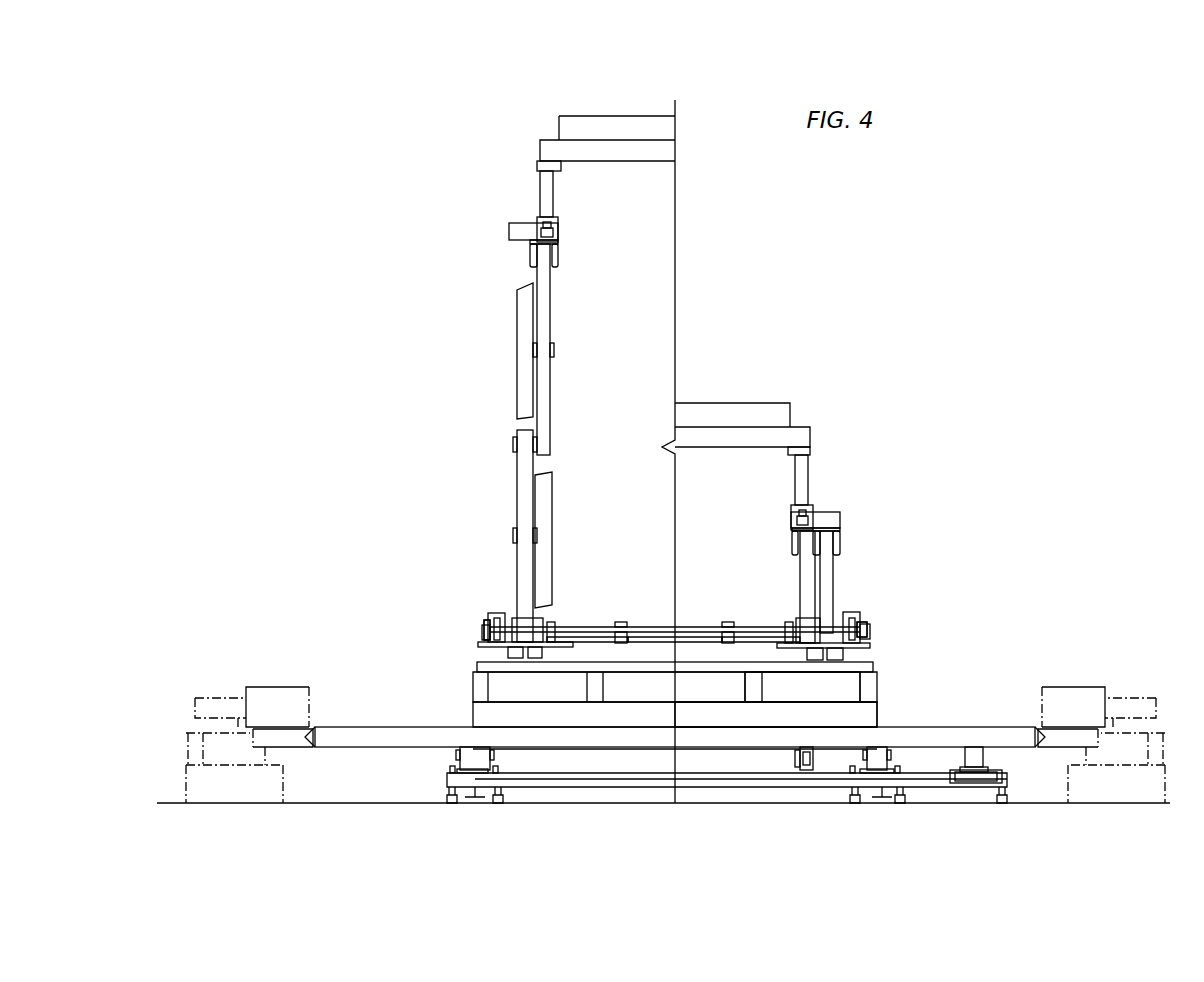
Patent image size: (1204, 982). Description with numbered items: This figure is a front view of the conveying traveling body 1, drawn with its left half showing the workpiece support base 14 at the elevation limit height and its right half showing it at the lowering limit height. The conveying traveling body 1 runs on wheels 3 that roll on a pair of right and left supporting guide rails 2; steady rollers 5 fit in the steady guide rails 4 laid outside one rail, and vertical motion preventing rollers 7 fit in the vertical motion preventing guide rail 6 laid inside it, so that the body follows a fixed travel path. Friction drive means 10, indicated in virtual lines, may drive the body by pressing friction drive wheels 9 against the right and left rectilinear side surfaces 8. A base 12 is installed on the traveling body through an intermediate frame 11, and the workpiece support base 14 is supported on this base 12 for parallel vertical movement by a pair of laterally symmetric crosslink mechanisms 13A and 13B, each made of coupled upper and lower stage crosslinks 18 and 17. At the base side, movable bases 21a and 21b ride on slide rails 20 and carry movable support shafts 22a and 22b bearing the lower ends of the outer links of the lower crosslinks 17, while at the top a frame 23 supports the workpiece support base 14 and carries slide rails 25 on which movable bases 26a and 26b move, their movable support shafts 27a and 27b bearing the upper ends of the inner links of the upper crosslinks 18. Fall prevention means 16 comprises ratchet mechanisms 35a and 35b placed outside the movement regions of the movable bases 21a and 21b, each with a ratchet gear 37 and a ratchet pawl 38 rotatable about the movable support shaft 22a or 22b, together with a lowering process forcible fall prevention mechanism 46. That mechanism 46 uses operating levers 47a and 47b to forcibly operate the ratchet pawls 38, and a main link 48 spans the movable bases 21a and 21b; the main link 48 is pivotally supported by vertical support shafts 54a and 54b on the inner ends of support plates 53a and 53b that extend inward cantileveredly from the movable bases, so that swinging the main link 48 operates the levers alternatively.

The conveying traveling body 1 is at (380, 726).
The supporting guide rails 2 is at (460, 772).
The wheels 3 is at (478, 752).
The steady guide rails 4 is at (1000, 778).
The steady rollers 5 is at (975, 748).
The vertical motion preventing guide rail 6 is at (808, 757).
The vertical motion preventing rollers 7 is at (806, 770).
The rectilinear side surfaces 8 is at (302, 752).
The friction drive wheels 9 is at (287, 700).
The friction drive means 10 is at (265, 685).
The intermediate frame 11 is at (645, 715).
The base 12 is at (690, 727).
The crosslink mechanism 13A is at (512, 390).
The crosslink mechanism 13B is at (836, 580).
The workpiece support base 14 is at (627, 124).
The fall prevention means 16 is at (490, 620).
The lower stage crosslinks 17 is at (517, 498).
The upper stage crosslinks 18 is at (552, 311).
The slide rails 20 is at (528, 658).
The movable base 21a is at (560, 650).
The movable base 21b is at (800, 652).
The movable support shaft 22a is at (482, 631).
The movable support shaft 22b is at (870, 628).
The frame 23 is at (546, 224).
The slide rails 25 is at (558, 224).
The movable base 26a is at (509, 232).
The movable base 26b is at (840, 520).
The movable support shaft 27a is at (528, 256).
The movable support shaft 27b is at (792, 545).
The ratchet mechanism 35a is at (487, 630).
The ratchet mechanism 35b is at (862, 629).
The ratchet gear 37 is at (480, 665).
The ratchet pawl 38 is at (497, 613).
The lowering process forcible fall prevention mechanism 46 is at (653, 624).
The operating lever 47a is at (530, 634).
The operating lever 47b is at (815, 640).
The main link 48 is at (690, 636).
The support plate 53a is at (598, 645).
The support plate 53b is at (748, 645).
The vertical support shaft 54a is at (621, 622).
The vertical support shaft 54b is at (728, 622).